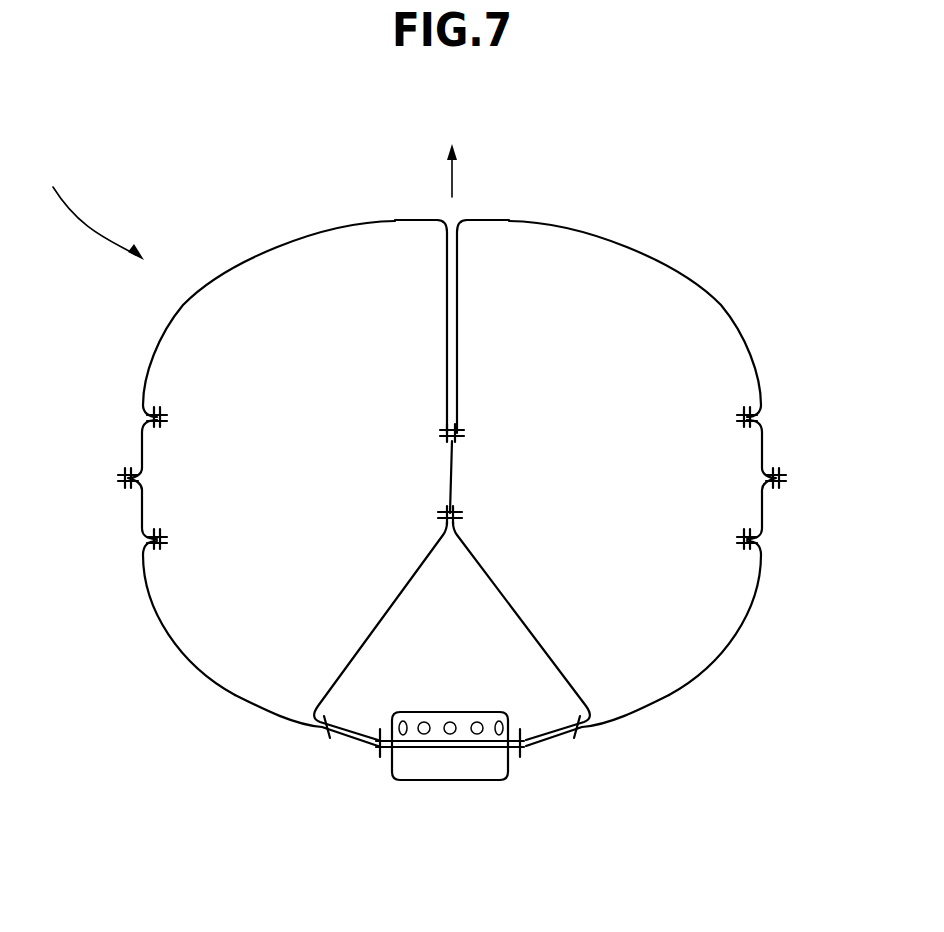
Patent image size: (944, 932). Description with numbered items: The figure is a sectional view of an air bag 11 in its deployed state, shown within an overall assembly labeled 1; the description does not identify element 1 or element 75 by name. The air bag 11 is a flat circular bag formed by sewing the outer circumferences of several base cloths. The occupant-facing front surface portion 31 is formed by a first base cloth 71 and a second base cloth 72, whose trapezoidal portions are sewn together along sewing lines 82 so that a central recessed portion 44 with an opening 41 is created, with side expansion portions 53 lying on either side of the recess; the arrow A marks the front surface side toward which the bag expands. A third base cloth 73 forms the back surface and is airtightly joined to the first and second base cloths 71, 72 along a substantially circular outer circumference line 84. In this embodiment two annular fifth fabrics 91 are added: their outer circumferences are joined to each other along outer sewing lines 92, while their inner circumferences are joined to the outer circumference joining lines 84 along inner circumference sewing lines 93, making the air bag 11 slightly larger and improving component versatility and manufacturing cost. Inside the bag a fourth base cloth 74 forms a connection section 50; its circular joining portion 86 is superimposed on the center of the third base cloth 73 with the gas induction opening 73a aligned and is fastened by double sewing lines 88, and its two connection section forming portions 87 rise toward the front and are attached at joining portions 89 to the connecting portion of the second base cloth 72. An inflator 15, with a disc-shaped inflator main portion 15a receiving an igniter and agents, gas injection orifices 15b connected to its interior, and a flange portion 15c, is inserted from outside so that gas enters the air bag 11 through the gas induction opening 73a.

The airbag device 1 is at (91, 213).
The air bag 11 is at (461, 492).
The inflator 15 is at (495, 772).
The inflator main portion 15a is at (445, 772).
The gas injection orifices 15b is at (478, 722).
The flange portion 15c is at (385, 752).
The front surface portion 31 is at (339, 221).
The opening 41 is at (449, 223).
The recessed portion 44 is at (448, 295).
The connection section 50 is at (490, 580).
The side expansion portions 53 is at (452, 274).
The first base cloth 71 is at (273, 238).
The second base cloth 72 is at (566, 228).
The third base cloth 73 is at (231, 694).
The gas induction opening 73a is at (515, 727).
The fourth base cloth 74 is at (395, 605).
The lower edge portion 75 is at (283, 718).
The sewing lines 82 is at (461, 433).
The outer circumference line 84 is at (160, 412).
The joining portion 86 is at (550, 735).
The connection section forming portions 87 is at (346, 657).
The double sewing lines 88 is at (372, 741).
The joining portions 89 is at (464, 515).
The fifth fabrics 91 is at (125, 474).
The outer sewing lines 92 is at (782, 478).
The inner circumference sewing lines 93 is at (160, 427).
The front surface A is at (451, 156).